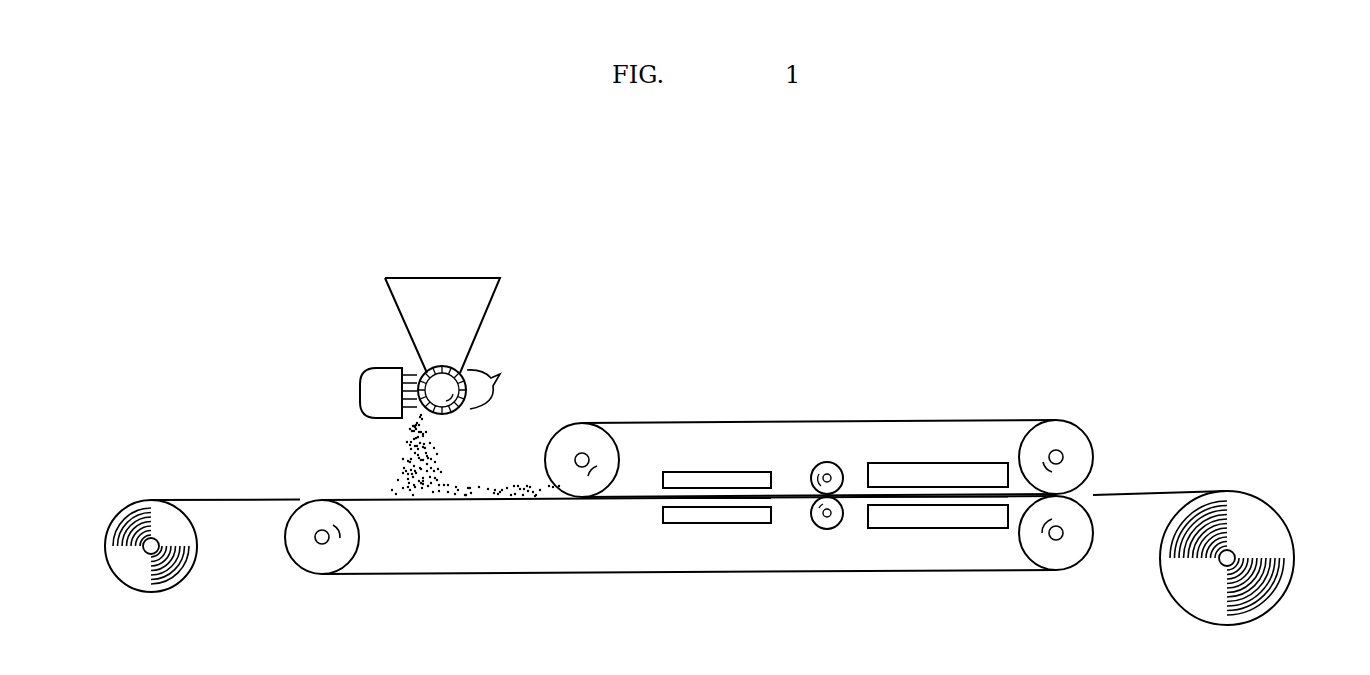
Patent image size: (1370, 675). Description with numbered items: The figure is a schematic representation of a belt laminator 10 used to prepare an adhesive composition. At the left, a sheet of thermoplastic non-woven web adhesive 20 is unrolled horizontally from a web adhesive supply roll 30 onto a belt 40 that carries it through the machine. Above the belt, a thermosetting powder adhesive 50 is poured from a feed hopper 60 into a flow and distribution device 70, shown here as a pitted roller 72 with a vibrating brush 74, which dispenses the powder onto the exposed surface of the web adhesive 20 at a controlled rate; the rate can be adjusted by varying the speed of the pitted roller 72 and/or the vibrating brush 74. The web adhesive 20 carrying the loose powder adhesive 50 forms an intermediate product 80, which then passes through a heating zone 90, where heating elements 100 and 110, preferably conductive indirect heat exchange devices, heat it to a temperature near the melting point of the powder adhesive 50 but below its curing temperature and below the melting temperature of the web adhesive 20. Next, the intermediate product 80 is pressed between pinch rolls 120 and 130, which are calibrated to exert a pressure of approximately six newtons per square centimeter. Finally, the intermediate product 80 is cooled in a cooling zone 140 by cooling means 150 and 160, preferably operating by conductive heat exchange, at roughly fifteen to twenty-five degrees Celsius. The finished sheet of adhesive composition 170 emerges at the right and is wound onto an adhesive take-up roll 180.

The belt laminator 10 is at (872, 315).
The web adhesive 20 is at (262, 497).
The web adhesive supply roll 30 is at (150, 592).
The belt 40 is at (475, 574).
The powder adhesive 50 is at (405, 475).
The feed hopper 60 is at (455, 285).
The flow and distribution device 70 is at (501, 381).
The pitted roller 72 is at (442, 415).
The vibrating brush 74 is at (372, 385).
The intermediate product 80 is at (503, 494).
The heating zone 90 is at (693, 500).
The heating element 100 is at (736, 475).
The heating element 110 is at (740, 508).
The pinch roll 120 is at (829, 463).
The pinch roll 130 is at (833, 530).
The cooling zone 140 is at (925, 500).
The cooling means 150 is at (956, 470).
The cooling means 160 is at (985, 528).
The adhesive composition 170 is at (1125, 492).
The adhesive take-up roll 180 is at (1281, 592).